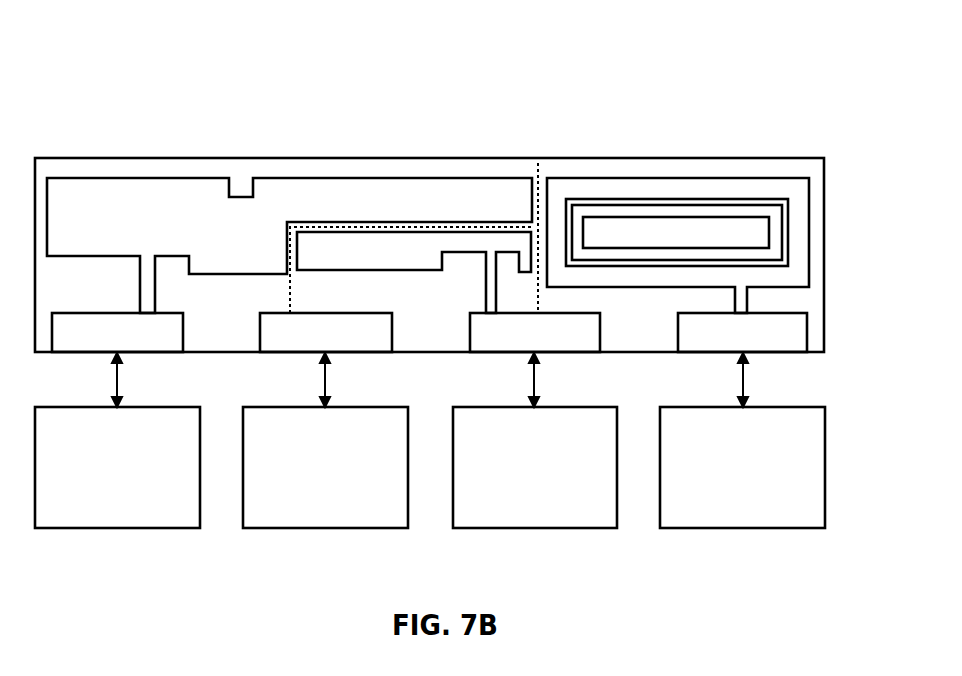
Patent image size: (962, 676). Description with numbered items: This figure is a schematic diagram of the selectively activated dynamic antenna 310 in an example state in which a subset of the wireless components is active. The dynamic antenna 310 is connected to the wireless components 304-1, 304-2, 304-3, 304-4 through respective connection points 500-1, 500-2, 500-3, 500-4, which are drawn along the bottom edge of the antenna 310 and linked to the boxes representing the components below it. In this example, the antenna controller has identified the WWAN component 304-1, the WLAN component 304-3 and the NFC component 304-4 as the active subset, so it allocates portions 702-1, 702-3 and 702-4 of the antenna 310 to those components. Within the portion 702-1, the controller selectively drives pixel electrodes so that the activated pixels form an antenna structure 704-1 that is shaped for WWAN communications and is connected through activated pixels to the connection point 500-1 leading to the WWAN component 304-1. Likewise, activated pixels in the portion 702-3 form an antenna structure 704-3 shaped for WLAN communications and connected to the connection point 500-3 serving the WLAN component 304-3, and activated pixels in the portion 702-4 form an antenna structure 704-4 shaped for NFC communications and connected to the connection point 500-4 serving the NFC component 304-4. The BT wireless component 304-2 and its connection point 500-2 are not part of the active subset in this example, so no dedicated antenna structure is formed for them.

The dynamic antenna 310 is at (844, 213).
The portion 702-1 is at (173, 168).
The antenna structure 704-1 is at (277, 168).
The portion 702-3 is at (385, 290).
The antenna structure 704-3 is at (472, 228).
The portion 702-4 is at (637, 168).
The antenna structure 704-4 is at (755, 178).
The connection point 500-1 is at (148, 344).
The connection point 500-2 is at (357, 344).
The connection point 500-3 is at (566, 344).
The connection point 500-4 is at (774, 344).
The WWAN component 304-1 is at (148, 454).
The wireless component 304-2 is at (356, 454).
The WLAN component 304-3 is at (566, 454).
The NFC component 304-4 is at (774, 454).